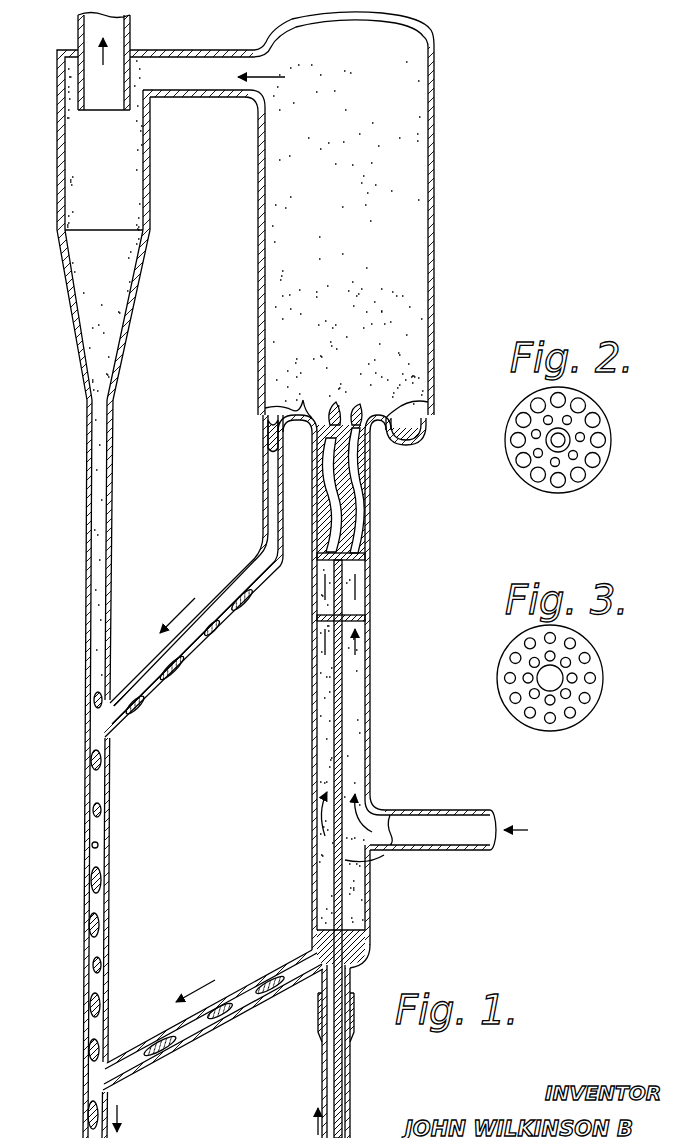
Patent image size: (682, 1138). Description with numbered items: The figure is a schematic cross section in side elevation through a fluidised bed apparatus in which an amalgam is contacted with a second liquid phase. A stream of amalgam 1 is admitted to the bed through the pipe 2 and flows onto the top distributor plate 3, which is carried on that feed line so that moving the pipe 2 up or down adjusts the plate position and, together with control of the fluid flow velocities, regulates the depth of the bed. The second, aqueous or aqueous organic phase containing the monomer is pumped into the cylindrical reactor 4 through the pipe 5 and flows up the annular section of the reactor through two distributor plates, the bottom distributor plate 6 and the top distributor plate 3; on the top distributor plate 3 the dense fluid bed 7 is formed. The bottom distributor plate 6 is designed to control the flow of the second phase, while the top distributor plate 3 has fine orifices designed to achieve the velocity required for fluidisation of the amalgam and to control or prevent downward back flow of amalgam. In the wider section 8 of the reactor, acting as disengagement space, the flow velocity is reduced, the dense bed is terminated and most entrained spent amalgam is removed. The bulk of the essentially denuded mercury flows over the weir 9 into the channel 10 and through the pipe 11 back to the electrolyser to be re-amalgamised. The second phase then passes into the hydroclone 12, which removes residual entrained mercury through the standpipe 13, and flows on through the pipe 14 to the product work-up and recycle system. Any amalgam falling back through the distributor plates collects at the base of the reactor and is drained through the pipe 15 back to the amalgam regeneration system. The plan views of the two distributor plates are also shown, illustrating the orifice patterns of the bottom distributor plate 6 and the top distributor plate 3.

In FIG. 1, the stream of amalgam 1 is at (346, 1137).
In FIG. 1, the pipe 2 is at (343, 677).
In FIG. 1, the top distributor plate 3 is at (373, 557).
In FIG. 3, the top distributor plate 3 is at (595, 653).
In FIG. 1, the cylindrical reactor 4 is at (371, 523).
In FIG. 1, the pipe 5 is at (424, 809).
In FIG. 1, the bottom distributor plate 6 is at (372, 619).
In FIG. 2, the bottom distributor plate 6 is at (596, 411).
In FIG. 1, the dense fluid bed 7 is at (343, 491).
In FIG. 1, the wider section of the reactor 8 is at (435, 265).
In FIG. 1, the weir 9 is at (303, 400).
In FIG. 1, the channel 10 is at (264, 432).
In FIG. 1, the pipe 11 is at (210, 629).
In FIG. 1, the hydroclone 12 is at (63, 150).
In FIG. 1, the standpipe 13 is at (88, 490).
In FIG. 1, the pipe 14 is at (131, 36).
In FIG. 1, the pipe 15 is at (203, 1031).